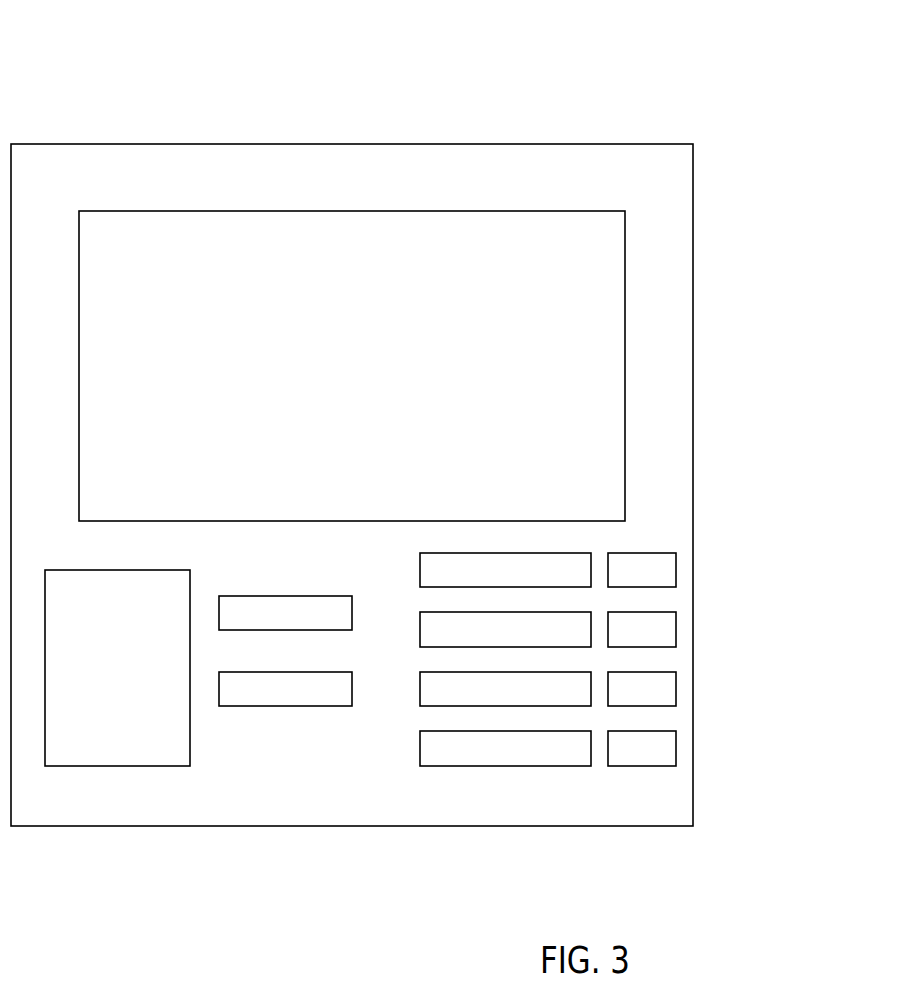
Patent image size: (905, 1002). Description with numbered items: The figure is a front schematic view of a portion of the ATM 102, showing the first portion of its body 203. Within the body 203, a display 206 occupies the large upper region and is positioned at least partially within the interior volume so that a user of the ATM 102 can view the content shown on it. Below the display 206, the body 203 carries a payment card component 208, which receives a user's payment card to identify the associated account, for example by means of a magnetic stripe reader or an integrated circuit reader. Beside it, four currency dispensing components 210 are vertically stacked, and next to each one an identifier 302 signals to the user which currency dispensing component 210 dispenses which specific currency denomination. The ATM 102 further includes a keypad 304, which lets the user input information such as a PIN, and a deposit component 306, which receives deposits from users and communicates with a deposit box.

The ATM 102 is at (158, 84).
The body 203 is at (693, 191).
The display 206 is at (367, 374).
The payment card component 208 is at (285, 613).
The currency dispensing component 210 is at (505, 659).
The identifier 302 is at (642, 659).
The keypad 304 is at (117, 668).
The deposit component 306 is at (285, 689).